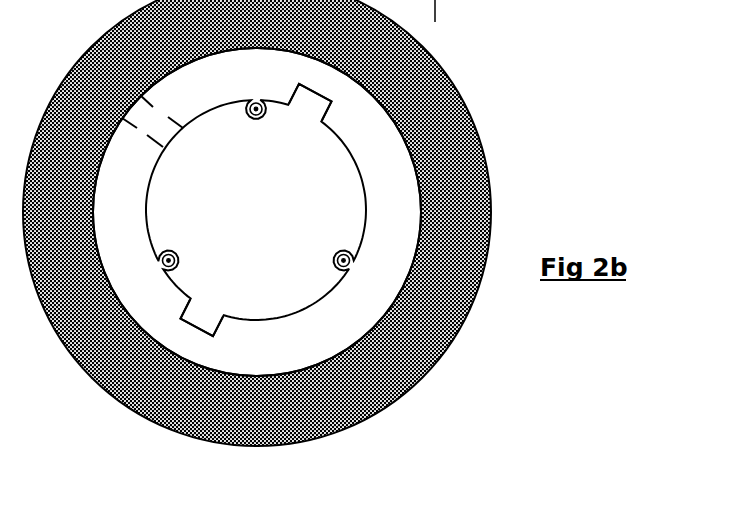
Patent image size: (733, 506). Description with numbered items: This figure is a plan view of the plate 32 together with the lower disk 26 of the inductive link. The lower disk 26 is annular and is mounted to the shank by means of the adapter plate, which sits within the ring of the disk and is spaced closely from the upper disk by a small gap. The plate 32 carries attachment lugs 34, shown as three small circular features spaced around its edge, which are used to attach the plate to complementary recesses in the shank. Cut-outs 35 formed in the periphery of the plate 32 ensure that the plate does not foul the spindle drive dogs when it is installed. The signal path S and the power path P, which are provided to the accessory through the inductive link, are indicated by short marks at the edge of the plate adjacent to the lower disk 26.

The lower disk 26 is at (472, 122).
The plate 32 is at (305, 282).
The attachment lugs 34 is at (238, 113).
The cut-outs 35 is at (310, 98).
The signal path S is at (161, 110).
The power path P is at (141, 145).